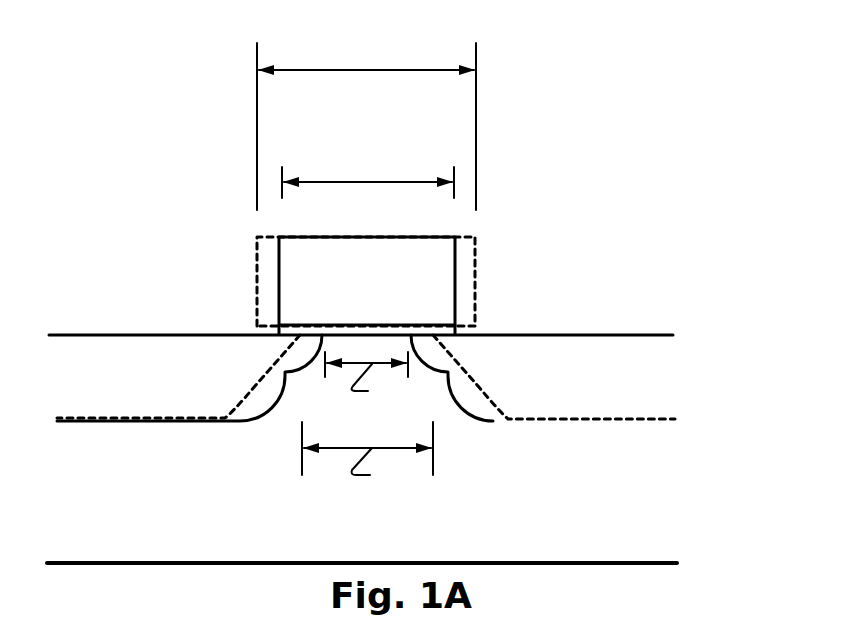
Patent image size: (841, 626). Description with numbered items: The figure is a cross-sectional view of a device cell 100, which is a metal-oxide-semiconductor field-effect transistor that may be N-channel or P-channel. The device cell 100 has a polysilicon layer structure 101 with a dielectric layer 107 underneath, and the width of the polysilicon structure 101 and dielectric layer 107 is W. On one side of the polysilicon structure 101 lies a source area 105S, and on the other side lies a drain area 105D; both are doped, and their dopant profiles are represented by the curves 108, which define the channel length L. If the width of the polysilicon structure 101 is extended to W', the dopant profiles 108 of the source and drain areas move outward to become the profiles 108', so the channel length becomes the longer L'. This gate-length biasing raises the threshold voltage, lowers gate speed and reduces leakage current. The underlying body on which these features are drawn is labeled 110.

The device cell 100 is at (619, 46).
The polysilicon layer structure 101 is at (427, 292).
The dielectric layer 107 is at (443, 330).
The drain area 105D is at (98, 340).
The source area 105S is at (638, 340).
The dopant profiles 108 is at (293, 397).
The dopant profiles 108' is at (366, 395).
The substrate 110 is at (670, 483).